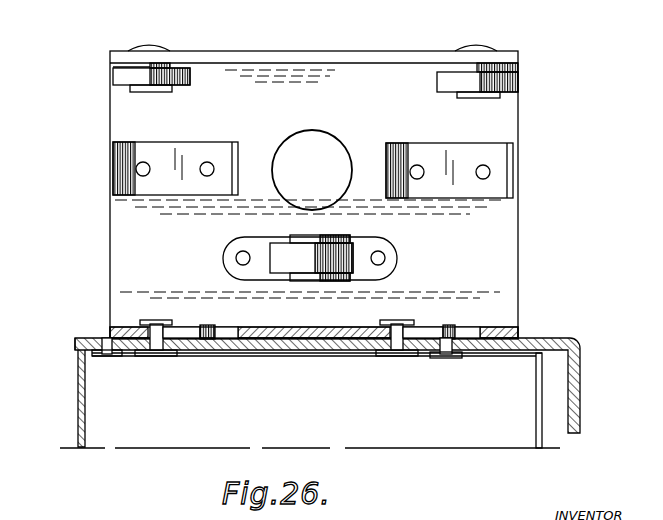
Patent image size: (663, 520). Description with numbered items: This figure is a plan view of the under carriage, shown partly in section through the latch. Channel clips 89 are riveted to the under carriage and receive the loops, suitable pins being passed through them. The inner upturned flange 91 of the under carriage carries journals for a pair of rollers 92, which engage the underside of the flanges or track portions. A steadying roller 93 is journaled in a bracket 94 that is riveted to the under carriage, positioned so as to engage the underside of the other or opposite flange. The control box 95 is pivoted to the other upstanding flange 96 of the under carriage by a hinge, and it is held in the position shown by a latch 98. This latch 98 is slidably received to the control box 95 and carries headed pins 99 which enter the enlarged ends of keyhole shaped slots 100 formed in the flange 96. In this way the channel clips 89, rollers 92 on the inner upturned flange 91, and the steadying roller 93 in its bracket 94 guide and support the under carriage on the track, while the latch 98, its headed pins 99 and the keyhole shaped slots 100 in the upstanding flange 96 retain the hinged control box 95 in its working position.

The channel clips 89 is at (203, 152).
The inner upturned flange 91 is at (378, 62).
The rollers 92 is at (183, 78).
The steadying roller 93 is at (280, 253).
The bracket 94 is at (392, 253).
The control box 95 is at (117, 383).
The upstanding flange 96 is at (335, 330).
The latch 98 is at (580, 348).
The headed pins 99 is at (156, 322).
The keyhole shaped slots 100 is at (228, 310).